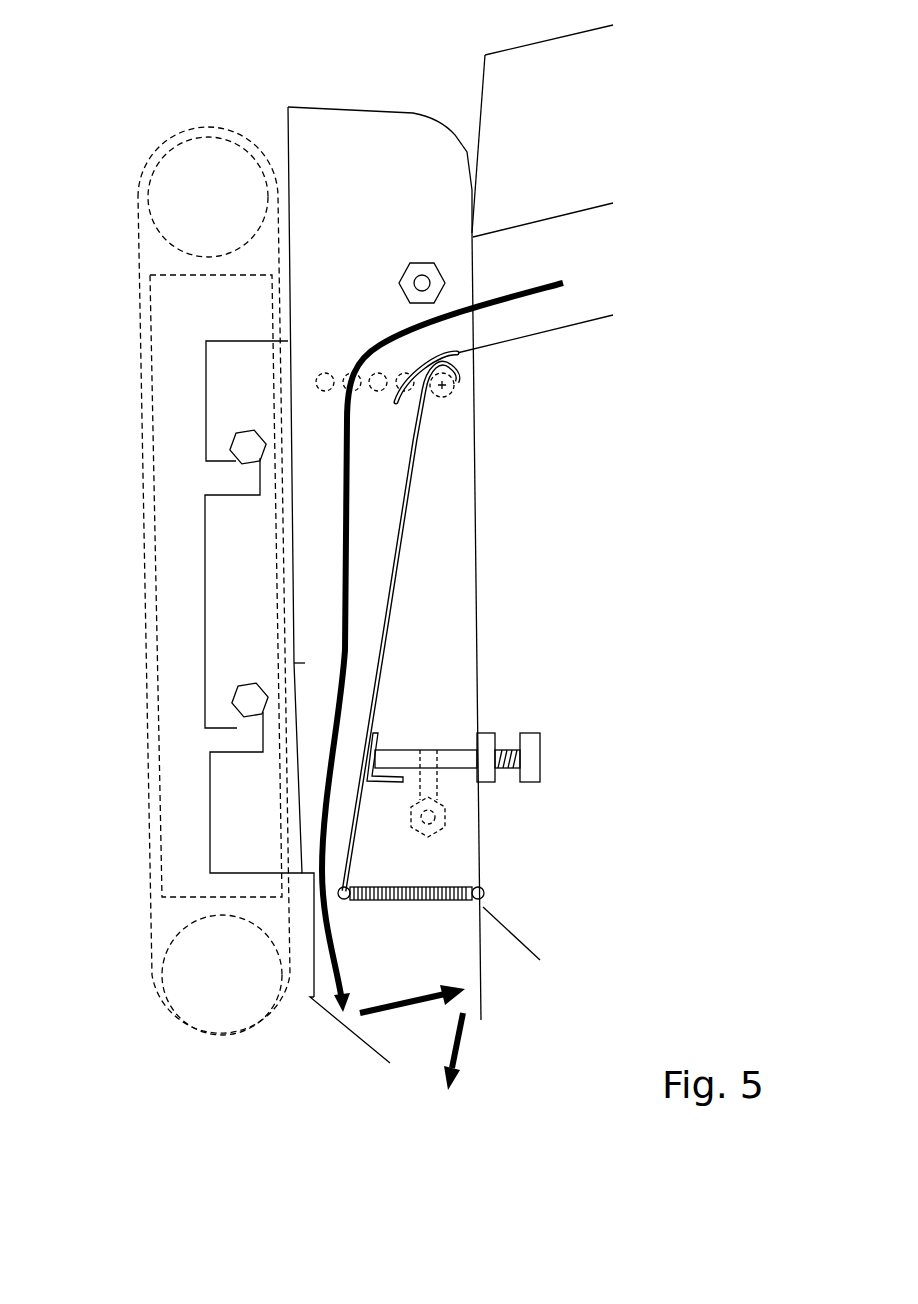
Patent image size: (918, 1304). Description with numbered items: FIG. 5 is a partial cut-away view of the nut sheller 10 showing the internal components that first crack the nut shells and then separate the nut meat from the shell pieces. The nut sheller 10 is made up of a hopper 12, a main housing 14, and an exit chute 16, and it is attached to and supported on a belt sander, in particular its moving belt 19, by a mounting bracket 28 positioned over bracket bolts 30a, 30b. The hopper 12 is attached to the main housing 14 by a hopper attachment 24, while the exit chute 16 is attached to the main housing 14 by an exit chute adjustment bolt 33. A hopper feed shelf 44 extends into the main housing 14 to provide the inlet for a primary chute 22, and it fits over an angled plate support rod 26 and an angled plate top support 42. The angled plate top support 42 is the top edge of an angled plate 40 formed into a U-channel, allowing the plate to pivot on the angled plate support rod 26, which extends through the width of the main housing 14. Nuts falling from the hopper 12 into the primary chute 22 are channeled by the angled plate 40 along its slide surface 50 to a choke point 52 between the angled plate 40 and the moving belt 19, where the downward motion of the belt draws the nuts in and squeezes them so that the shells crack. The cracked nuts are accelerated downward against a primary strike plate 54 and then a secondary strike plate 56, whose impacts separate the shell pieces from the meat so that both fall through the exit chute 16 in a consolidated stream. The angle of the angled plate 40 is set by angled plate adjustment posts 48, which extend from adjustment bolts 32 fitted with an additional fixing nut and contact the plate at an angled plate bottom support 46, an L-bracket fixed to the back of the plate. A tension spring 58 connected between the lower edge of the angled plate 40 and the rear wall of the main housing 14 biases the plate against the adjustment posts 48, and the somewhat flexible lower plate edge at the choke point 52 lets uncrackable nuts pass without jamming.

The nut sheller 10 is at (262, 45).
The hopper 12 is at (465, 73).
The main housing 14 is at (568, 520).
The exit chute 16 is at (575, 952).
The moving belt 19 is at (137, 220).
The primary chute 22 is at (473, 557).
The hopper attachment 24 is at (424, 258).
The angled plate support rod 26 is at (445, 397).
The mounting bracket 28 is at (205, 588).
The bracket bolt 30a is at (240, 440).
The bracket bolt 30b is at (240, 695).
The adjustment bolts 32 is at (543, 758).
The exit chute adjustment bolt 33 is at (445, 833).
The angled plate 40 is at (412, 468).
The angled plate top support 42 is at (452, 365).
The hopper feed shelf 44 is at (418, 372).
The angled plate bottom support 46 is at (368, 785).
The angled plate adjustment posts 48 is at (397, 733).
The slide surface 50 is at (395, 542).
The choke point 52 is at (318, 857).
The primary strike plate 54 is at (329, 1024).
The secondary strike plate 56 is at (489, 968).
The tension spring 58 is at (362, 903).